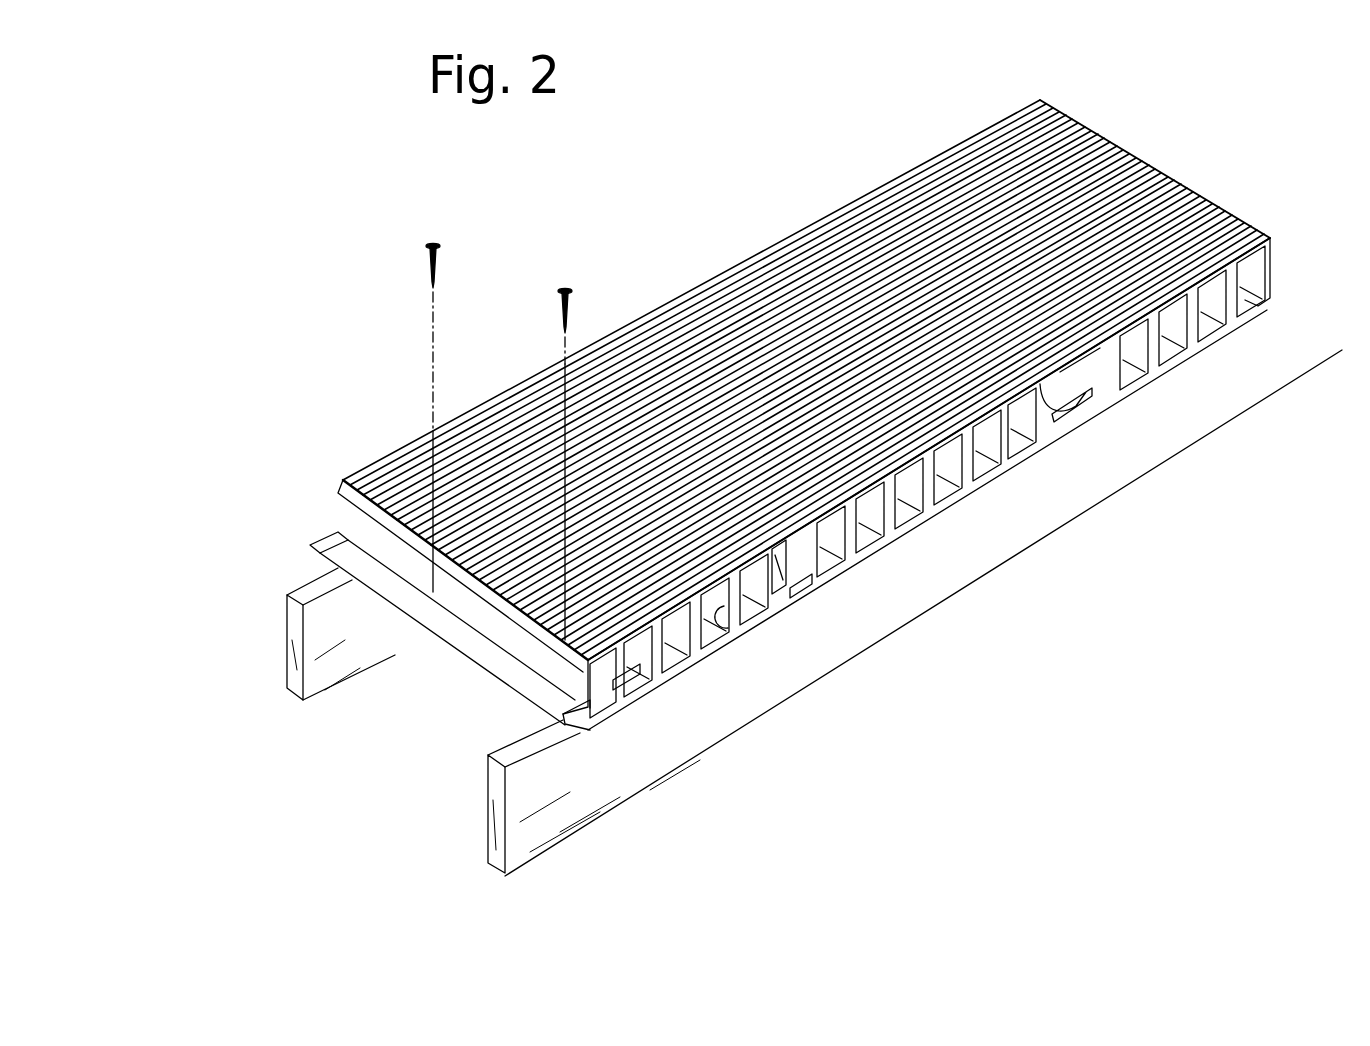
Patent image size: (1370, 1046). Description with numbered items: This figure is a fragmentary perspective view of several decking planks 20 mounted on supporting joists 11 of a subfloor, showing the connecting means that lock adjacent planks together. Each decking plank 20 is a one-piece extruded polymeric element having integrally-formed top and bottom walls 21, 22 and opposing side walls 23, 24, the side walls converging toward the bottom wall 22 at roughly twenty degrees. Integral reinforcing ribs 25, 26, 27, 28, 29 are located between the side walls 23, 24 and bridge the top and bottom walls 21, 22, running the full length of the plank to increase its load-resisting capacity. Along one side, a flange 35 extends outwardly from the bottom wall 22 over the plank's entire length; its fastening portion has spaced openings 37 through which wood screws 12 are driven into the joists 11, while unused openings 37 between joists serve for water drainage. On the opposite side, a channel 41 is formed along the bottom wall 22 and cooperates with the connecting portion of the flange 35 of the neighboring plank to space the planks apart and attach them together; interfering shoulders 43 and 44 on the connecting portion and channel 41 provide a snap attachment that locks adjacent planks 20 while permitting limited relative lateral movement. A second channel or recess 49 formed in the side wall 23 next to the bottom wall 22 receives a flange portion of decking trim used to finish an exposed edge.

The supporting joist 11 is at (300, 646).
The wood screw 12 is at (560, 306).
The decking plank 20 is at (804, 498).
The top wall 21 is at (535, 690).
The bottom wall 22 is at (705, 652).
The side wall 23 is at (590, 713).
The side wall 24 is at (838, 575).
The reinforcing rib 25 is at (670, 672).
The reinforcing rib 26 is at (688, 665).
The reinforcing rib 27 is at (733, 640).
The reinforcing rib 28 is at (790, 617).
The reinforcing rib 29 is at (819, 581).
The flange 35 is at (520, 680).
The opening 37 is at (463, 606).
The channel 41 is at (778, 605).
The interfering shoulder 43 is at (553, 730).
The interfering shoulder 44 is at (840, 610).
The second channel or recess 49 is at (677, 667).